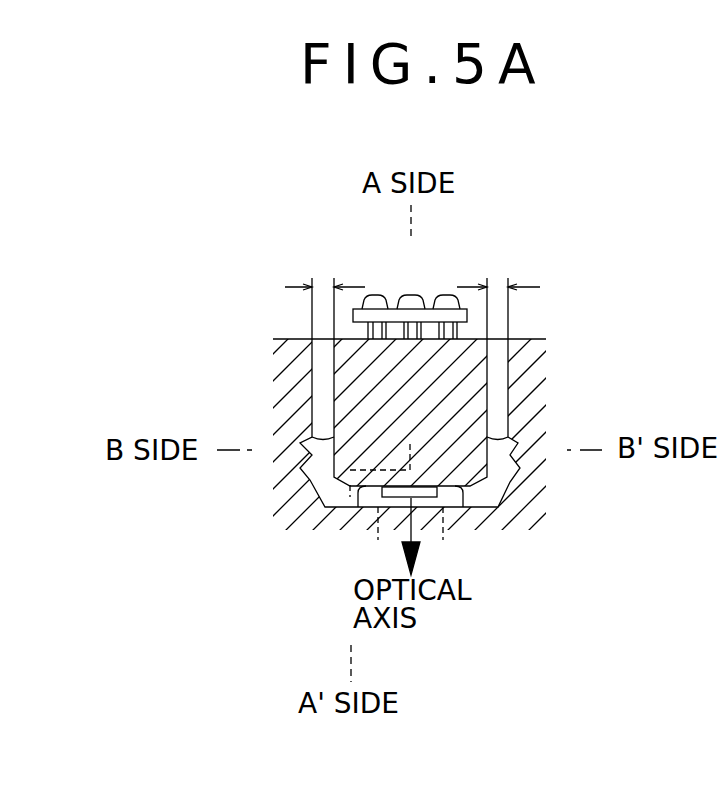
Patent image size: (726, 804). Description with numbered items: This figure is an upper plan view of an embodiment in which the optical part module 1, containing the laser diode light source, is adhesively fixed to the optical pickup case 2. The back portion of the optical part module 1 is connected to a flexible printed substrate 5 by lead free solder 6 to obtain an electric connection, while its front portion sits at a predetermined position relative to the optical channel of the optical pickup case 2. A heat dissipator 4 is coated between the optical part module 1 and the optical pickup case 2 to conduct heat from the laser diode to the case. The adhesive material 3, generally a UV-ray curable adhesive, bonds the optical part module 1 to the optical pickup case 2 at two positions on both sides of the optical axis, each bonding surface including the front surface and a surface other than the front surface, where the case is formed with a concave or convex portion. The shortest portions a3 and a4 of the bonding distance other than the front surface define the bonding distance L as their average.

The optical part module 1 is at (358, 397).
The optical pickup case 2 is at (297, 515).
The adhesive material 3 is at (332, 487).
The heat dissipator 4 is at (497, 397).
The flexible printed substrate 5 is at (423, 315).
The lead free solder 6 is at (407, 300).
The shortest portion of bonding distance a3 is at (325, 267).
The shortest portion of bonding distance a4 is at (498, 267).